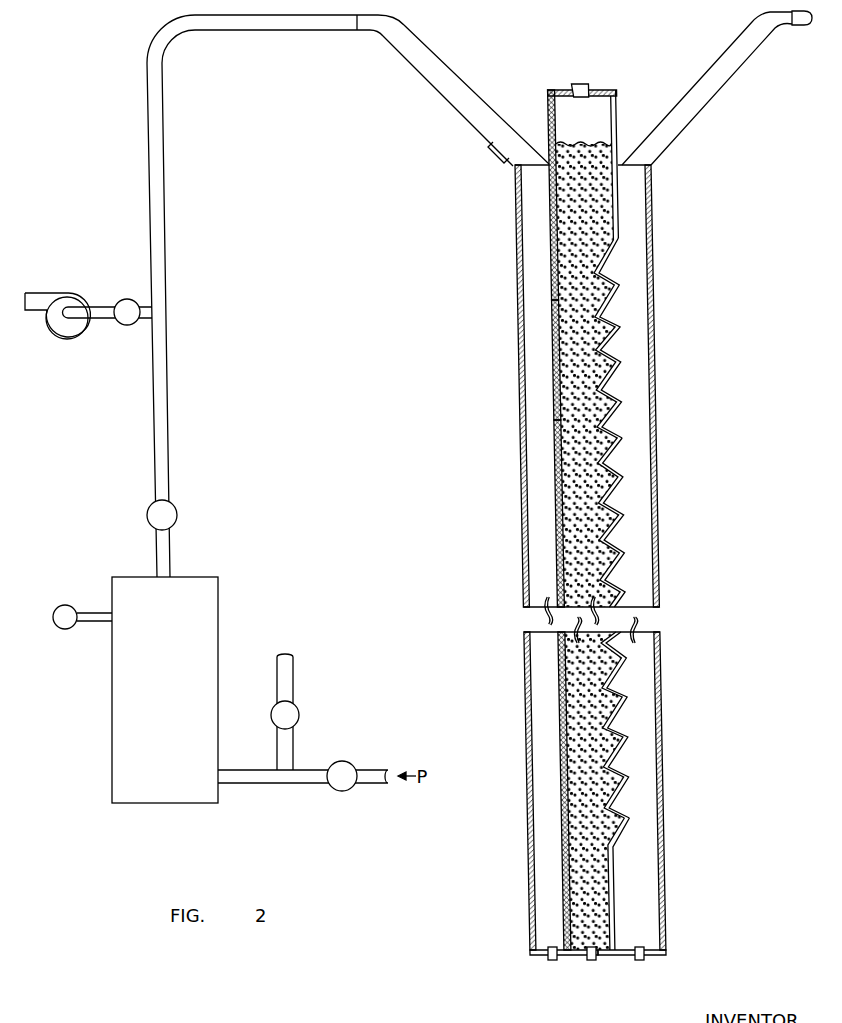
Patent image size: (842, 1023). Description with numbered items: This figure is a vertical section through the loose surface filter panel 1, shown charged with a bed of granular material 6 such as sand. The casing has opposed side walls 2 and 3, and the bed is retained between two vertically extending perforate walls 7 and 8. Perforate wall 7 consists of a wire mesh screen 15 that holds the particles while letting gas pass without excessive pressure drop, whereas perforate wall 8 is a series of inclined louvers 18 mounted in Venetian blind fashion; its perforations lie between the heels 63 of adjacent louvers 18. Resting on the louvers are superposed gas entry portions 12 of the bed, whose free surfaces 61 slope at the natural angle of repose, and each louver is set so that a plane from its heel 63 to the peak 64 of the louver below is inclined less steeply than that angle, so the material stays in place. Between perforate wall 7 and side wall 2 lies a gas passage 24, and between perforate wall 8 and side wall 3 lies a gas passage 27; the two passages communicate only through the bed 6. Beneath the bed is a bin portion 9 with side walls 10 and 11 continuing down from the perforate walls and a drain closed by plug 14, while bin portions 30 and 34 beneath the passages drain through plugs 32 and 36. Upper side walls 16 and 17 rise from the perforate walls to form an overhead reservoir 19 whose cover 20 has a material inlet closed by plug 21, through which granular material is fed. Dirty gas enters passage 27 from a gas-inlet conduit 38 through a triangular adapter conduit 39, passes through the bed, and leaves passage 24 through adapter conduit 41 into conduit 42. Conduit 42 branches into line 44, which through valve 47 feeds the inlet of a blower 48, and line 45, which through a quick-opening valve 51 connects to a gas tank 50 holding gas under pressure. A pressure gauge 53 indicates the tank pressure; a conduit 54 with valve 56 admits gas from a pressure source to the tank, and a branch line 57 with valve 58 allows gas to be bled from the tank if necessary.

The loose surface filter panel 1 is at (669, 599).
The side wall 2 is at (525, 678).
The side wall 3 is at (662, 680).
The bed of granular material 6 is at (580, 407).
The perforate wall 7 is at (552, 482).
The perforate wall 8 is at (630, 491).
The bin portion 9 is at (581, 942).
The side wall 10 is at (575, 897).
The side wall 11 is at (608, 898).
The gas entry portions 12 is at (608, 328).
The plug 14 is at (592, 960).
The wire mesh screen 15 is at (550, 333).
The upper side wall 16 is at (553, 222).
The upper side wall 17 is at (620, 193).
The louvers 18 is at (617, 452).
The reservoir 19 is at (626, 128).
The cover 20 is at (614, 88).
The plug 21 is at (580, 82).
The gas passage 24 is at (548, 707).
The gas passage 27 is at (642, 715).
The bin portion 30 is at (552, 929).
The drain plug 32 is at (552, 960).
The bin portion 34 is at (651, 932).
The drain plug 36 is at (639, 960).
The gas-inlet conduit 38 is at (808, 26).
The adapter conduit 39 is at (698, 120).
The adapter conduit 41 is at (445, 95).
The conduit 42 is at (288, 32).
The line 44 is at (106, 306).
The line 45 is at (168, 402).
The valve 47 is at (136, 325).
The blower 48 is at (80, 338).
The gas tank 50 is at (218, 632).
The quick-opening valve 51 is at (177, 514).
The pressure gauge 53 is at (78, 606).
The conduit 54 is at (243, 783).
The valve 56 is at (333, 792).
The branch line 57 is at (295, 676).
The valve 58 is at (300, 714).
The free surfaces 61 is at (610, 318).
The heel 63 is at (607, 814).
The peak 64 is at (627, 820).